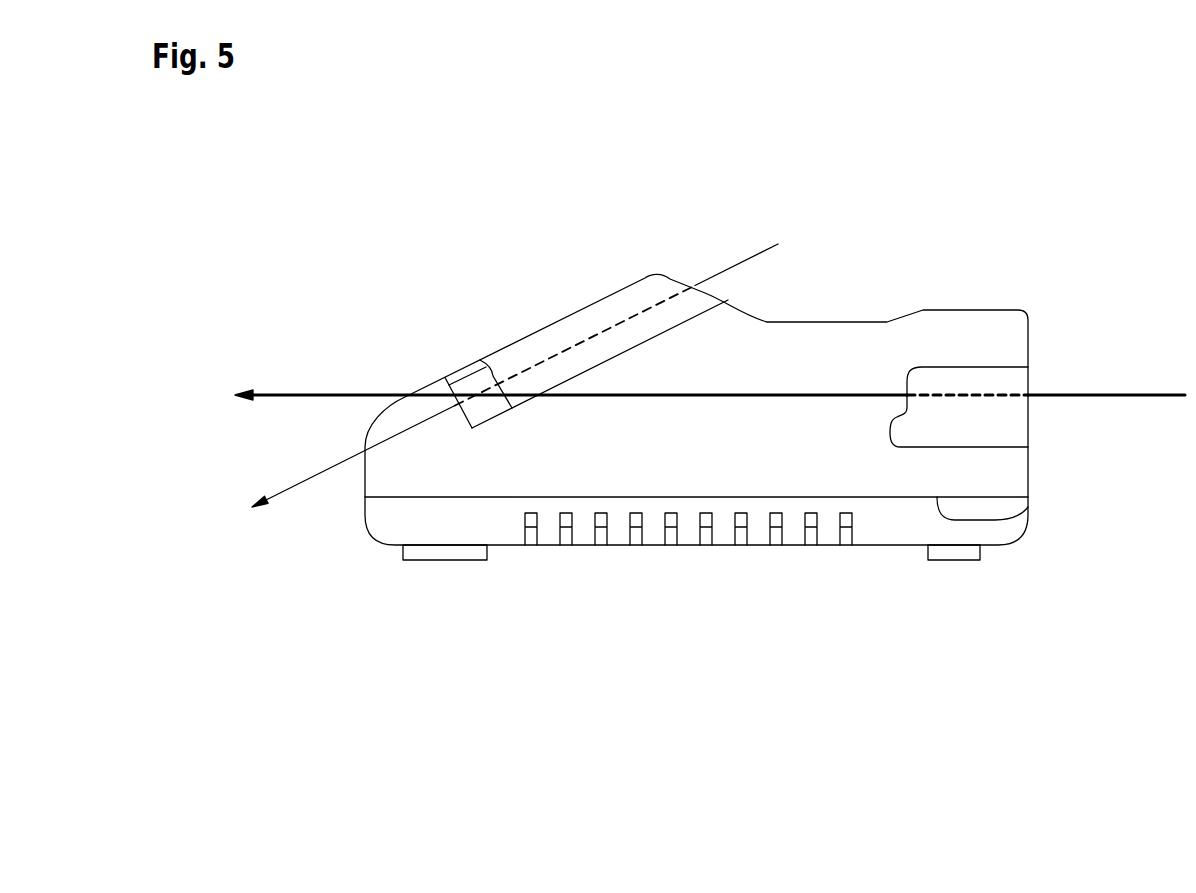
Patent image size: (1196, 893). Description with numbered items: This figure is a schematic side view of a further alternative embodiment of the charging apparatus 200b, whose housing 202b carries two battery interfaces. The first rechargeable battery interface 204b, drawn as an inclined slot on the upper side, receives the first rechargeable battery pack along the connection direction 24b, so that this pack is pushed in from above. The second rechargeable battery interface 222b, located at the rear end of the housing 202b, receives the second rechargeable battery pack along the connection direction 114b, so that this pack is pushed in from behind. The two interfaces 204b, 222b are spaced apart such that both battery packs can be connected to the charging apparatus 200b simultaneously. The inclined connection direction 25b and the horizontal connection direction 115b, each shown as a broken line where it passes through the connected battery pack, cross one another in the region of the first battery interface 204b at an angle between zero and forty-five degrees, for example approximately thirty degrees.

The charging apparatus 200b is at (745, 379).
The housing 202b is at (977, 327).
The first rechargeable battery interface 204b is at (579, 290).
The second rechargeable battery interface 222b is at (1033, 385).
The connection direction 114b is at (710, 352).
The connection direction 115b is at (290, 394).
The connection direction 24b is at (515, 407).
The connection direction 25b is at (302, 482).